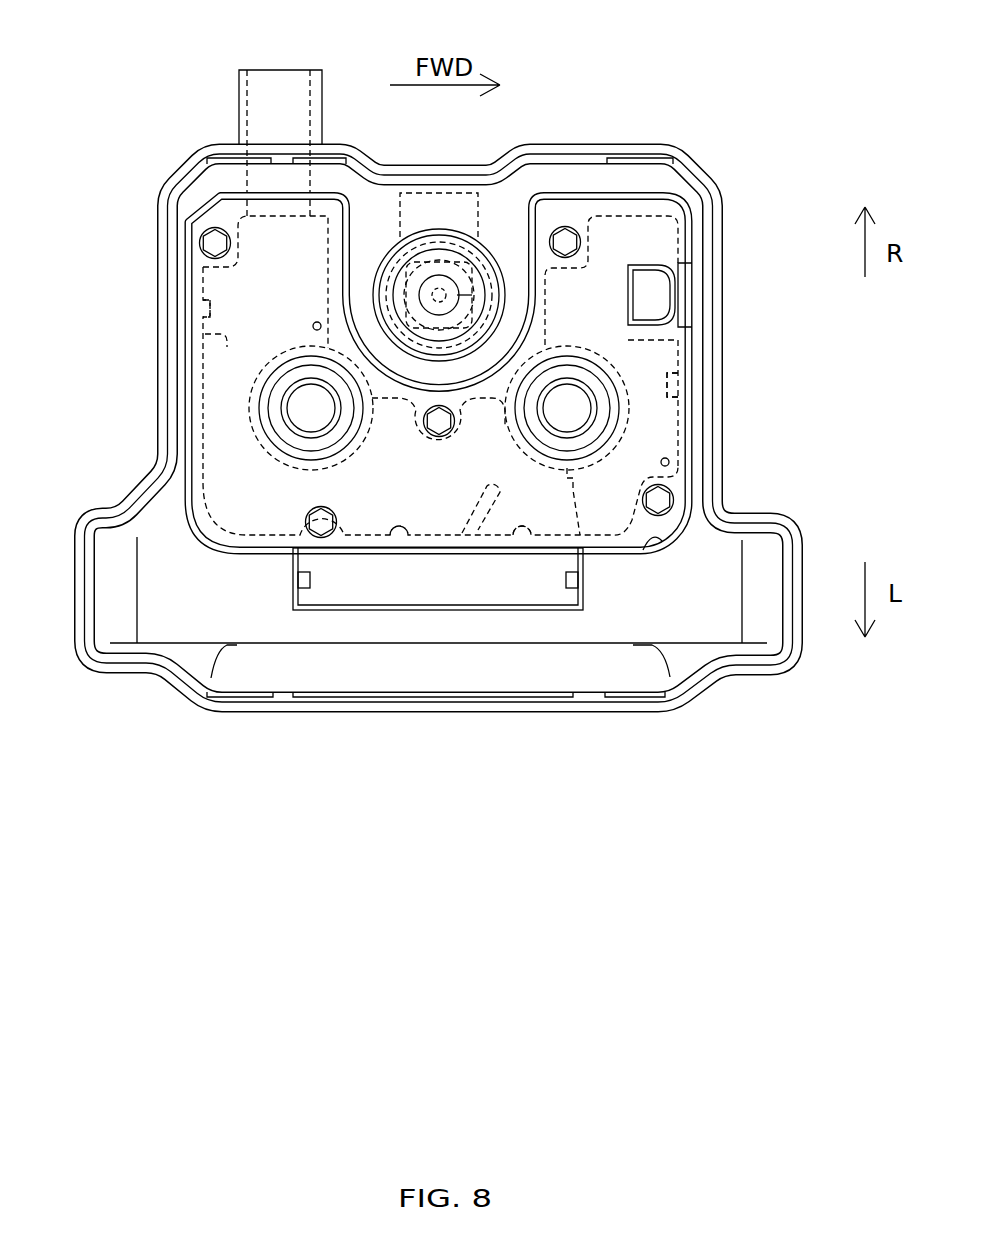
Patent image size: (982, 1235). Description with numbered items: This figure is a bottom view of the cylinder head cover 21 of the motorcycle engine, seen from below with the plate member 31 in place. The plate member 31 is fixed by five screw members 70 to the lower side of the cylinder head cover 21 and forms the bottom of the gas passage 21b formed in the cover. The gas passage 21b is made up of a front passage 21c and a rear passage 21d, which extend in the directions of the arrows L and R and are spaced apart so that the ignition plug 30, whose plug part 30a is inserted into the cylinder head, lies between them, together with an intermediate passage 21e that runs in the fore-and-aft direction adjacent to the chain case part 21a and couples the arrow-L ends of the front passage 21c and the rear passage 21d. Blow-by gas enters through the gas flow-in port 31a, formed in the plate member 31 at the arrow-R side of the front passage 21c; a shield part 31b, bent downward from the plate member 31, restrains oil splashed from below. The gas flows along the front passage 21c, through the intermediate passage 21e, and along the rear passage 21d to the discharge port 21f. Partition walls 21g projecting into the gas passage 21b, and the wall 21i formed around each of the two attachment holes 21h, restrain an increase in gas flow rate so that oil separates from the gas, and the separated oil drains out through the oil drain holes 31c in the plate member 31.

The cylinder head cover 21 is at (788, 623).
The chain case part 21a is at (628, 597).
The gas passage 21b is at (417, 537).
The front passage 21c is at (672, 387).
The rear passage 21d is at (205, 305).
The intermediate passage 21e is at (540, 547).
The discharge port 21f is at (335, 155).
The partition walls 21g is at (220, 340).
The attachment holes 21h is at (293, 407).
The wall 21i is at (290, 455).
The ignition plug 30 is at (440, 192).
The plug part 30a is at (468, 287).
The plate member 31 is at (675, 228).
The gas flow-in port 31a is at (653, 273).
The shield part 31b is at (645, 308).
The oil drain holes 31c is at (315, 322).
The screw members 70 is at (213, 240).